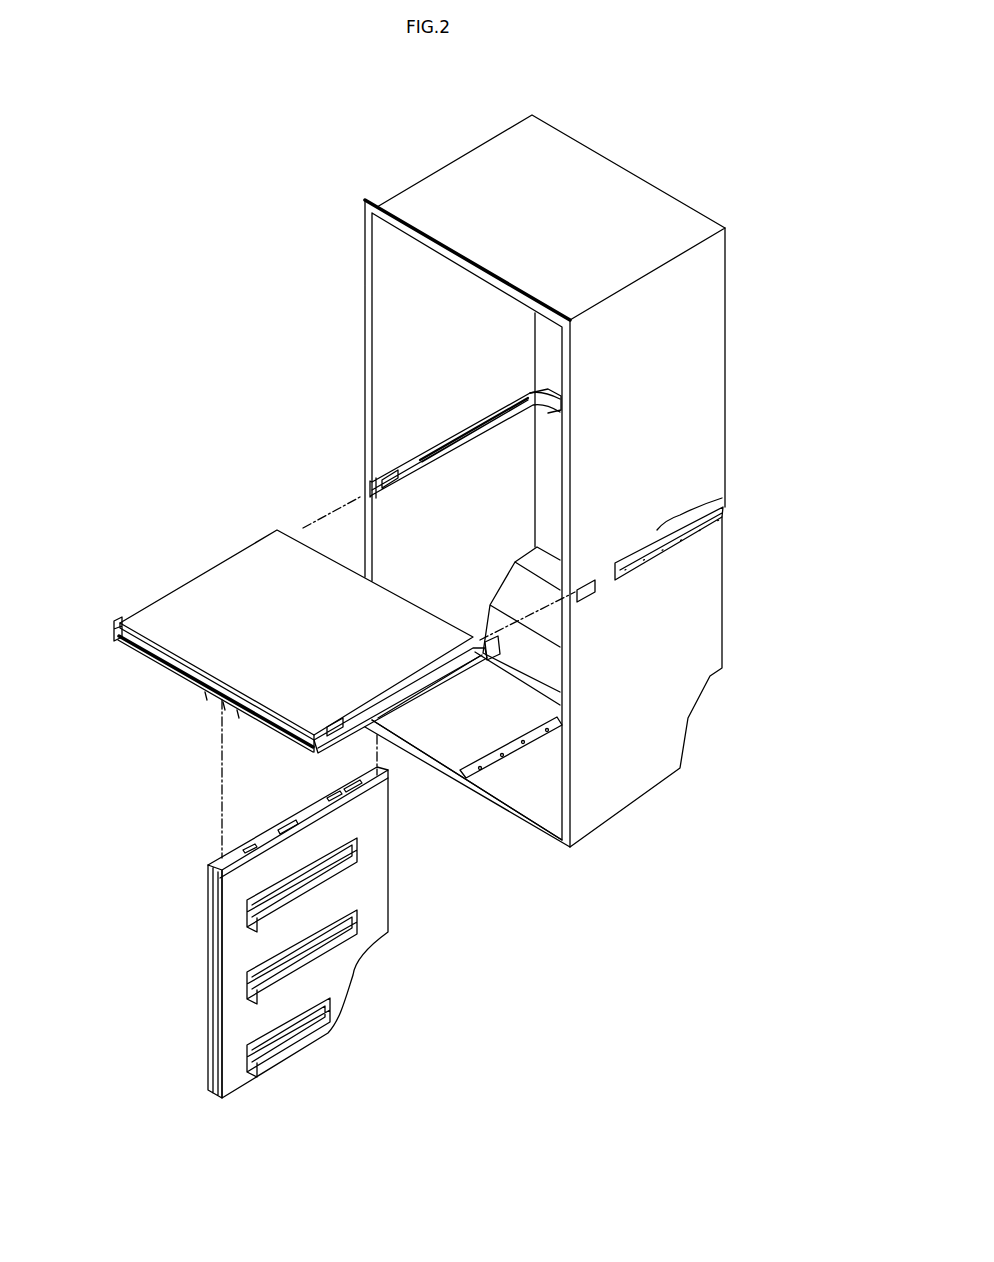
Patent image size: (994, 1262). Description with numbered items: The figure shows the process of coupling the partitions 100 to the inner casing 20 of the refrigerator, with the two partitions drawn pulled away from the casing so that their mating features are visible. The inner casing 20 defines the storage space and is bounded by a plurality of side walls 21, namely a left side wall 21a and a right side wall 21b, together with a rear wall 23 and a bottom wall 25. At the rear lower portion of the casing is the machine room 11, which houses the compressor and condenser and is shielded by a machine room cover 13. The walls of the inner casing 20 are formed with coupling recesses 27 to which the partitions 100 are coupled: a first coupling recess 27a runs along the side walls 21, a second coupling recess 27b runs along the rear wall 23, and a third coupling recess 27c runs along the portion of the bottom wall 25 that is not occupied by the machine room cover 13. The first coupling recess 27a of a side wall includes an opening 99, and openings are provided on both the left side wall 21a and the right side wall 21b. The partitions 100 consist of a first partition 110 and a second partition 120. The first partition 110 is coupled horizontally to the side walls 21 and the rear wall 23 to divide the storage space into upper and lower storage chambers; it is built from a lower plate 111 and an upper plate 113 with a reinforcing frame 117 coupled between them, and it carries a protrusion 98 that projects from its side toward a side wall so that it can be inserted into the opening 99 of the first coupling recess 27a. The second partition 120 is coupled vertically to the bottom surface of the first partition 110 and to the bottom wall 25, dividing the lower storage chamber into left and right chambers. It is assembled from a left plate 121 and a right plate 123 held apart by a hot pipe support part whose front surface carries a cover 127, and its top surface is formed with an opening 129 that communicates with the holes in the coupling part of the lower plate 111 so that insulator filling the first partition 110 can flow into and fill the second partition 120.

The machine room 11 is at (519, 481).
The machine room cover 13 is at (530, 655).
The inner casing 20 is at (384, 506).
The side walls 21 is at (300, 312).
The left side wall 21a is at (417, 283).
The right side wall 21b is at (588, 358).
The rear wall 23 is at (553, 447).
The bottom wall 25 is at (437, 700).
The coupling recesses 27 is at (645, 573).
The first coupling recess 27a is at (725, 495).
The second coupling recess 27b is at (563, 401).
The third coupling recess 27c is at (533, 730).
The protrusion 98 is at (350, 728).
The opening 99 is at (596, 594).
The partitions 100 is at (277, 814).
The first partition 110 is at (277, 673).
The lower plate 111 is at (340, 733).
The upper plate 113 is at (175, 603).
The reinforcing frame 117 is at (113, 624).
The second partition 120 is at (286, 899).
The left plate 121 is at (207, 917).
The right plate 123 is at (380, 893).
The cover 127 is at (217, 952).
The opening 129 is at (290, 815).